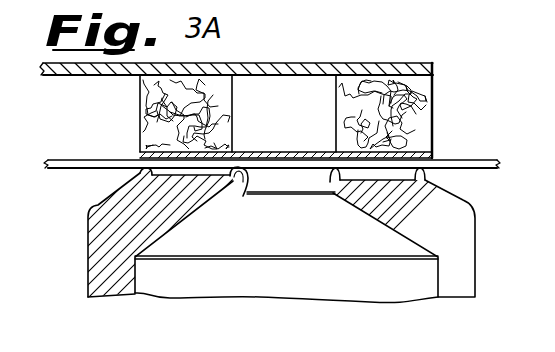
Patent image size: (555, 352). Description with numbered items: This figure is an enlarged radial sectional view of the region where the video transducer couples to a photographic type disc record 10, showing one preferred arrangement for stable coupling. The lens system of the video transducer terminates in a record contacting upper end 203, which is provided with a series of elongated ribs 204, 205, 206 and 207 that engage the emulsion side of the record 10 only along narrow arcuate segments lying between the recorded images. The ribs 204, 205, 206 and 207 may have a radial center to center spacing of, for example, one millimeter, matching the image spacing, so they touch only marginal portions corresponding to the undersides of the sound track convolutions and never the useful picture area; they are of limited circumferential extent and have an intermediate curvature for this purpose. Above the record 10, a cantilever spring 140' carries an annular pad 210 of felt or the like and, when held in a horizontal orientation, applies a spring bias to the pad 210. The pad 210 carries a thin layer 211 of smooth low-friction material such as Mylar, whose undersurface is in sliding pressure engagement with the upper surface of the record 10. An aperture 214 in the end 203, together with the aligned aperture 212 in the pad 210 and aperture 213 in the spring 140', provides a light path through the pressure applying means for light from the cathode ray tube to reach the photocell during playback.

The photographic type disc record 10 is at (66, 155).
The cantilever spring 140' is at (248, 91).
The record contacting upper end 203 is at (464, 200).
The elongated rib 204 is at (137, 173).
The elongated rib 205 is at (242, 198).
The elongated rib 206 is at (332, 178).
The elongated rib 207 is at (427, 173).
The annular pad 210 is at (432, 103).
The layer of smooth material 211 is at (432, 154).
The aperture in pad 212 is at (334, 100).
The aperture in spring 213 is at (234, 66).
The aperture in end 214 is at (276, 186).